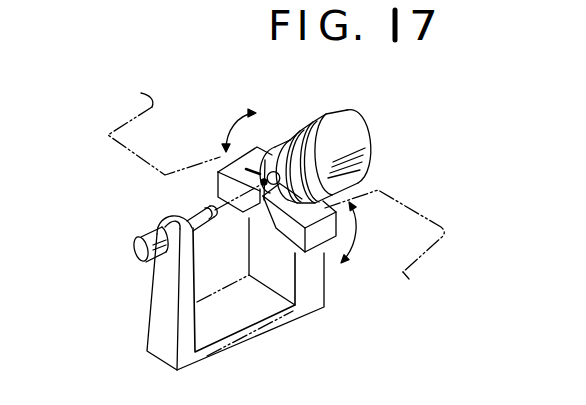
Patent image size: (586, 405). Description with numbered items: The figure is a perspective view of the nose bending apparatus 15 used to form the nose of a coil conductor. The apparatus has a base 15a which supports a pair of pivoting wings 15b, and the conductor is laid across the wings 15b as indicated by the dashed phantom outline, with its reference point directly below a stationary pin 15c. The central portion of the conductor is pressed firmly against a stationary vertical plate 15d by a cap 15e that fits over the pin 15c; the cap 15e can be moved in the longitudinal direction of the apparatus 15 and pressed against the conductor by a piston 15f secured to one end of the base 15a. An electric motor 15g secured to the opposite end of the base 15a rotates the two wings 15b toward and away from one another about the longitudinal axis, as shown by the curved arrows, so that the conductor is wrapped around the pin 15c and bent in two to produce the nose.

The nose bending apparatus 15 is at (418, 164).
The base 15a is at (308, 302).
The pivoting wings 15b is at (217, 177).
The stationary pin 15c is at (267, 170).
The stationary vertical plate 15d is at (308, 133).
The cap 15e is at (189, 213).
The piston 15f is at (134, 256).
The electric motor 15g is at (366, 131).